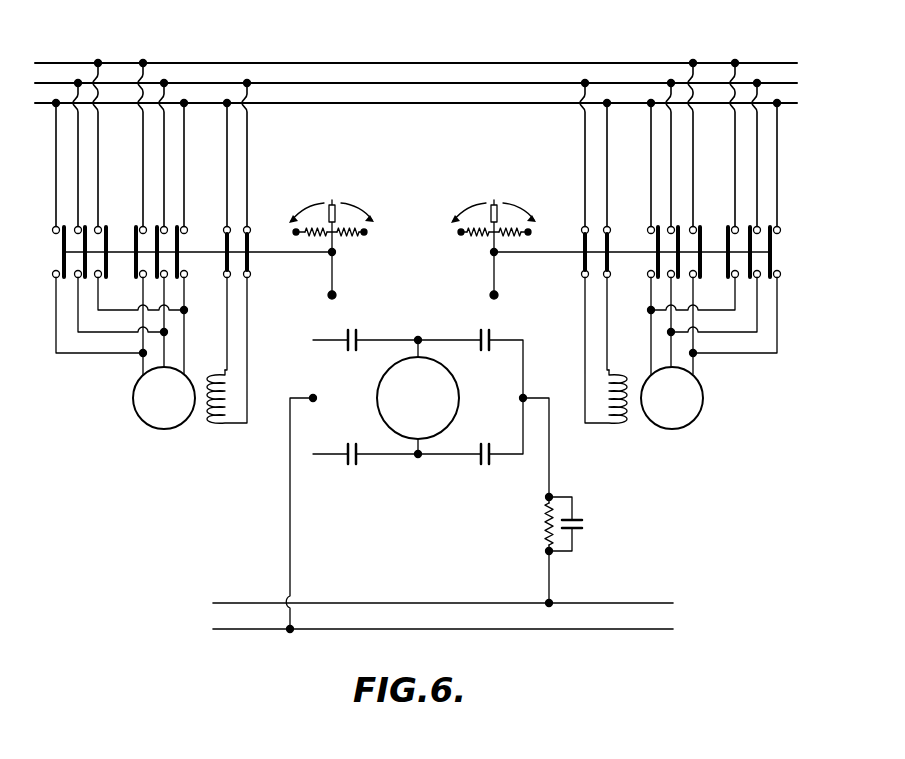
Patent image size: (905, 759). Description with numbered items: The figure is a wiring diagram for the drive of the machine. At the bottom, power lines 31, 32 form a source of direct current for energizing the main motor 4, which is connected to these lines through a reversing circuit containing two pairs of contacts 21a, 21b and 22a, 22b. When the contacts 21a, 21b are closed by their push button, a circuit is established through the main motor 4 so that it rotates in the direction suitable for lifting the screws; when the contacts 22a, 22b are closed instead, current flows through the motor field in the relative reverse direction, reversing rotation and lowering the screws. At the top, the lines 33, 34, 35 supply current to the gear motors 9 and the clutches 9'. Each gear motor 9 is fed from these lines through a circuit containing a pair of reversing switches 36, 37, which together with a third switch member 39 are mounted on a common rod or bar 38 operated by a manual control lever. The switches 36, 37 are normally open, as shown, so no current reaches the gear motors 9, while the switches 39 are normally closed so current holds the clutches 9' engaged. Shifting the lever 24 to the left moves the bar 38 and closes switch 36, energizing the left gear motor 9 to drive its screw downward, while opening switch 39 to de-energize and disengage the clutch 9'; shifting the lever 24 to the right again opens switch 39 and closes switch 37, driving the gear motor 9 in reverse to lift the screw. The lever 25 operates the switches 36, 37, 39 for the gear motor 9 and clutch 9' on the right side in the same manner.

The power line 33 is at (320, 63).
The power line 34 is at (364, 83).
The power line 35 is at (388, 104).
The reversing switch 36 is at (106, 222).
The reversing switch 37 is at (181, 244).
The switch member 39 is at (248, 230).
The rod or bar 38 is at (308, 254).
The lever 24 is at (332, 203).
The lever 25 is at (494, 203).
The gear motor 9 is at (417, 398).
The clutch 9' is at (401, 373).
The main motor 4 is at (377, 391).
The contact 22a is at (358, 330).
The contact 21b is at (492, 329).
The contact 21a is at (352, 468).
The contact 22b is at (488, 468).
The power line 31 is at (226, 601).
The power line 32 is at (220, 628).